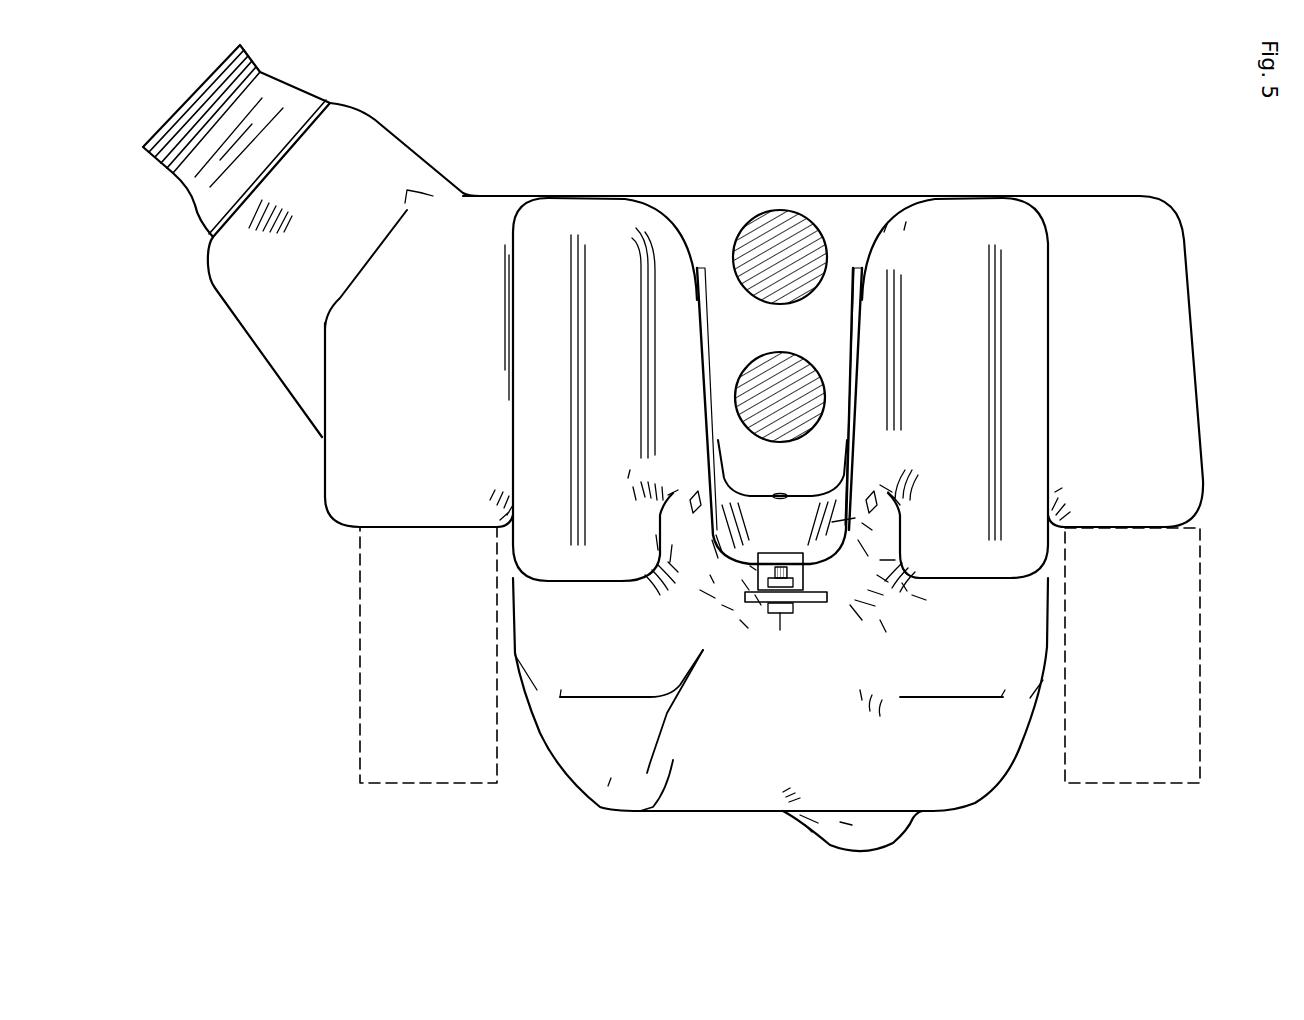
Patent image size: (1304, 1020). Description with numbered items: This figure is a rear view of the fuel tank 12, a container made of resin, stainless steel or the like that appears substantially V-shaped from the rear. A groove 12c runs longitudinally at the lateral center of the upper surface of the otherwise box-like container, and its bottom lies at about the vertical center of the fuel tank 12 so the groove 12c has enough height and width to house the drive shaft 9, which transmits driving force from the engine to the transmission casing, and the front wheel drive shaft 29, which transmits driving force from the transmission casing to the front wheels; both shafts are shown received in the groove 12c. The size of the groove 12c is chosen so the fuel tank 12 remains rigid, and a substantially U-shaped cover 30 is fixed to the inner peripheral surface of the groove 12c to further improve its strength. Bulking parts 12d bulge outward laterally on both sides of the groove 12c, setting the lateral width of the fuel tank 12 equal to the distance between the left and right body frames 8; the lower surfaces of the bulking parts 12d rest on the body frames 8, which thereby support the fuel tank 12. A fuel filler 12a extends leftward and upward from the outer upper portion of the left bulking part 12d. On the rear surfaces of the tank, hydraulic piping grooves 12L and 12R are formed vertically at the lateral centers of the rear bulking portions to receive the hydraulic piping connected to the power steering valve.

The fuel tank 12 is at (1083, 113).
The fuel filler 12a is at (263, 68).
The groove 12c is at (715, 227).
The bulking parts 12d is at (439, 393).
The hydraulic piping groove 12L is at (630, 385).
The hydraulic piping groove 12R is at (962, 385).
The drive shaft 9 is at (807, 212).
The front wheel drive shaft 29 is at (812, 368).
The cover 30 is at (858, 268).
The body frames 8 is at (360, 723).